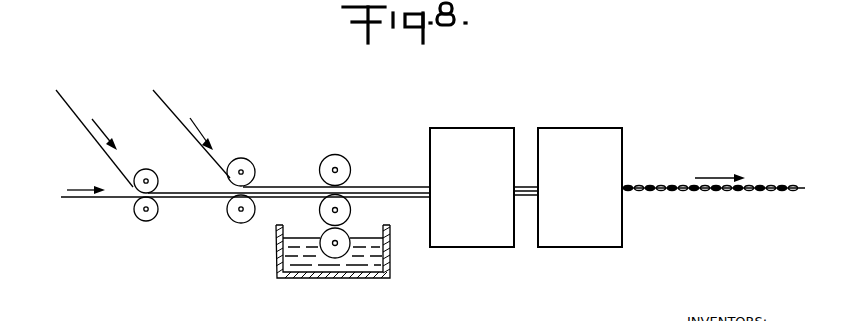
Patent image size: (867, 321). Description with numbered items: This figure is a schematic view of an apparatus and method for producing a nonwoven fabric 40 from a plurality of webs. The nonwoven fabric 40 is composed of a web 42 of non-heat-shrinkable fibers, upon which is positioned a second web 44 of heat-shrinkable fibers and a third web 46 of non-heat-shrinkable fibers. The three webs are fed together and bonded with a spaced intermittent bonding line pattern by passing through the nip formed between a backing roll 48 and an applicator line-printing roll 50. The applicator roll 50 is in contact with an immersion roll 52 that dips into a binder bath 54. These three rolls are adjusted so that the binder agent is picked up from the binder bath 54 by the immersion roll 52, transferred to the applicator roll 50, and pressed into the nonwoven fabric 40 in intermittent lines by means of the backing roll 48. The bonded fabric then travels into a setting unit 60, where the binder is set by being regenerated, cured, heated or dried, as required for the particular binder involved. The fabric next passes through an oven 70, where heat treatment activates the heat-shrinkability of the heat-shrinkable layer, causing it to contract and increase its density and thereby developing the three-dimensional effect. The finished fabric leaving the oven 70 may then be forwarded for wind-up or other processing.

The nonwoven fabric 40 is at (377, 186).
The web of non-heat-shrinkable fibers 42 is at (127, 198).
The second web of heat-shrinkable fibers 44 is at (74, 113).
The third web of non-heat-shrinkable fibers 46 is at (172, 112).
The backing roll 48 is at (333, 154).
The applicator line-printing roll 50 is at (319, 209).
The immersion roll 52 is at (335, 253).
The binder bath 54 is at (390, 256).
The setting unit 60 is at (467, 128).
The oven 70 is at (575, 128).